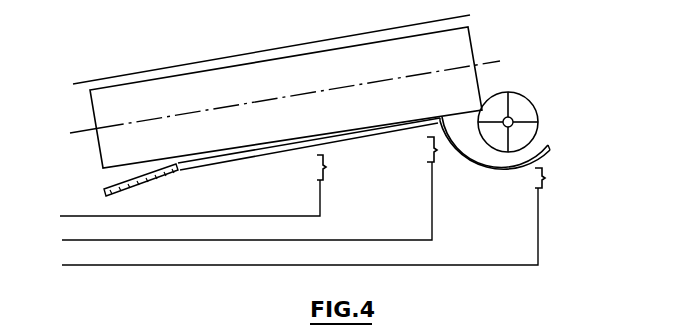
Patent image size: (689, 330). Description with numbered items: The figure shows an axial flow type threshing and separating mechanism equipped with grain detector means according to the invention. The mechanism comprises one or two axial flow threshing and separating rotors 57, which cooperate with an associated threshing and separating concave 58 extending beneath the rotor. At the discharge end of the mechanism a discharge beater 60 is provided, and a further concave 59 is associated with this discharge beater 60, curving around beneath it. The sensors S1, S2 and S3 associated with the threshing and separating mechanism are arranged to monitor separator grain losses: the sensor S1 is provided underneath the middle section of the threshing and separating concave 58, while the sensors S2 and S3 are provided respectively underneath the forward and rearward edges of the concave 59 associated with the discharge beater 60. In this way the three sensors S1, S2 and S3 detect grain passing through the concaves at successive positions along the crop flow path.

The axial flow threshing and separating rotor 57 is at (472, 50).
The threshing and separating concave 58 is at (247, 160).
The concave 59 is at (507, 173).
The discharge beater 60 is at (535, 106).
The sensor S1 is at (326, 167).
The sensor S2 is at (437, 150).
The sensor S3 is at (545, 178).